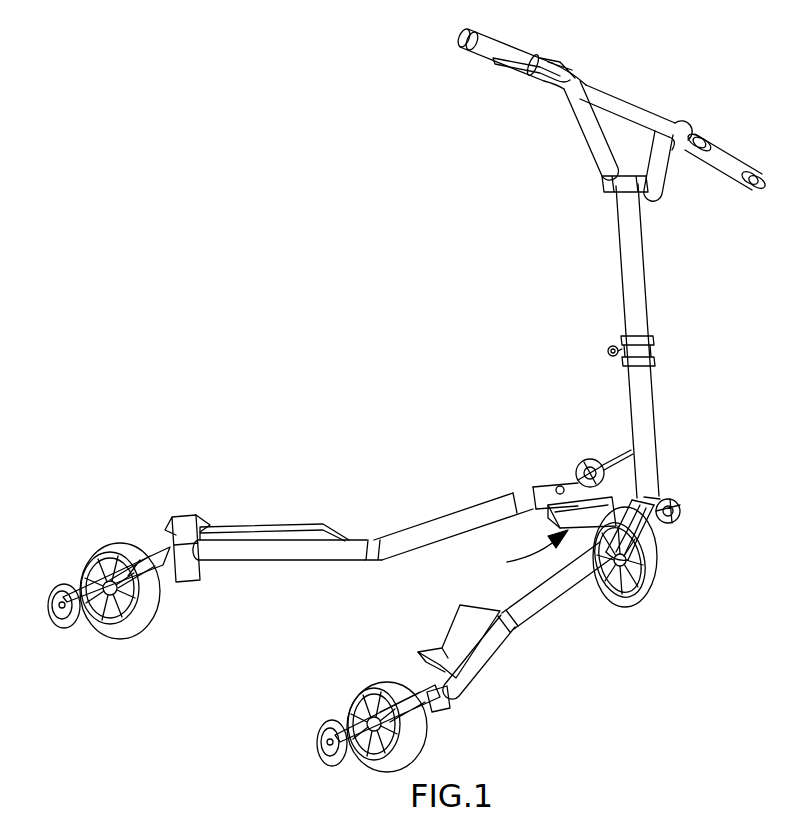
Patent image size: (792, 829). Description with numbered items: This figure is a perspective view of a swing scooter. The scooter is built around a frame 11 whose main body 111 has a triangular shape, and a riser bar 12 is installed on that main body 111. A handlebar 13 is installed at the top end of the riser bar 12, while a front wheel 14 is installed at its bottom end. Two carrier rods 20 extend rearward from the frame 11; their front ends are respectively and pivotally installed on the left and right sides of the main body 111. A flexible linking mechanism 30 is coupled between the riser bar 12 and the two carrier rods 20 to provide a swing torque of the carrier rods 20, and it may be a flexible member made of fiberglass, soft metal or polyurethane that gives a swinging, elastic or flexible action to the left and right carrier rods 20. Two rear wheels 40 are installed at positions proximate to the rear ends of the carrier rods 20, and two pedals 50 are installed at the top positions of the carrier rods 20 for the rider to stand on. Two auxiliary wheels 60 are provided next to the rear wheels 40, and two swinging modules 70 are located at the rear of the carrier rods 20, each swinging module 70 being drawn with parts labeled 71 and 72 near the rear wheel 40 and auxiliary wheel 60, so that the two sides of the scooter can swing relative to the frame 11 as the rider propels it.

The frame 11 is at (544, 521).
The main body 111 is at (628, 452).
The riser bar 12 is at (638, 302).
The handlebar 13 is at (583, 128).
The front wheel 14 is at (657, 570).
The carrier rods 20 is at (417, 528).
The flexible linking mechanism 30 is at (653, 540).
The rear wheels 40 is at (125, 623).
The pedals 50 is at (250, 532).
The auxiliary wheels 60 is at (67, 583).
The swinging modules 70 is at (136, 516).
The wheel arm 71 is at (153, 548).
The bracket 72 is at (177, 517).